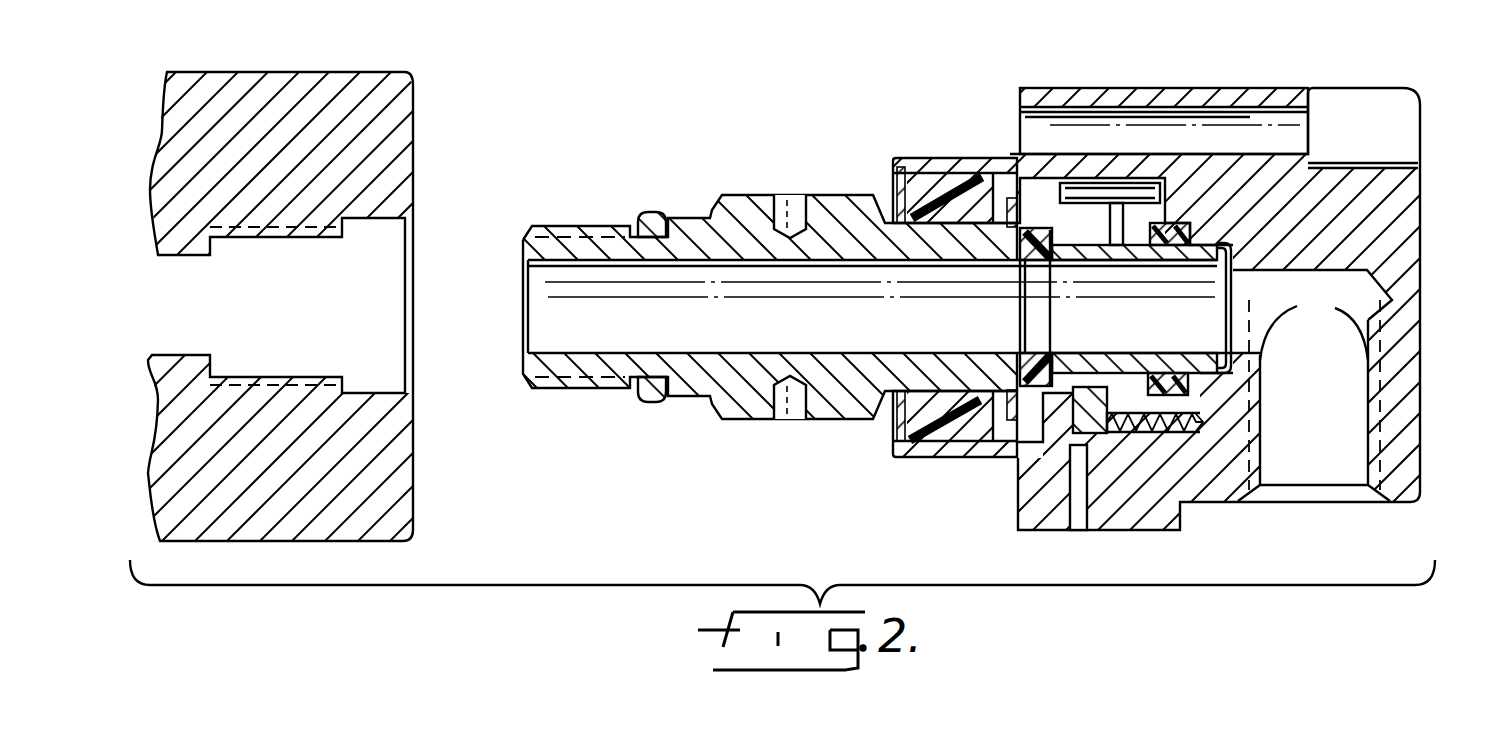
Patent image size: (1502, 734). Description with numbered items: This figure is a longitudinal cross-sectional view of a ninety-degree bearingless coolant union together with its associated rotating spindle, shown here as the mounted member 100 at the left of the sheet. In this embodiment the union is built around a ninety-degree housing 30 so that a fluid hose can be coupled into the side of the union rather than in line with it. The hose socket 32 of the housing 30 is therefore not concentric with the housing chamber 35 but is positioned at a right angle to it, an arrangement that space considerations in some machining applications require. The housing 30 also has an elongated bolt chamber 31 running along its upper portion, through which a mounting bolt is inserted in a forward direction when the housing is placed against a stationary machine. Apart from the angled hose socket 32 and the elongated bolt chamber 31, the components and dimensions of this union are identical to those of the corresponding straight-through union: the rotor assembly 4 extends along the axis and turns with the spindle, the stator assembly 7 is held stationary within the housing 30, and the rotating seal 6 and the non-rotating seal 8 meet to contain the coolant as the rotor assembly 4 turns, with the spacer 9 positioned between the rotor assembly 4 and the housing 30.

The mold or workpiece block 100 is at (340, 72).
The rotor assembly 4 is at (752, 195).
The spacer 9 is at (930, 175).
The rotating seal 6 is at (1048, 240).
The non-rotating seal 8 is at (1050, 403).
The stator assembly 7 is at (1065, 450).
The elongated bolt chamber 31 is at (1185, 122).
The 90° housing 30 is at (1405, 212).
The housing chamber 35 is at (1382, 288).
The hose socket 32 is at (1325, 480).